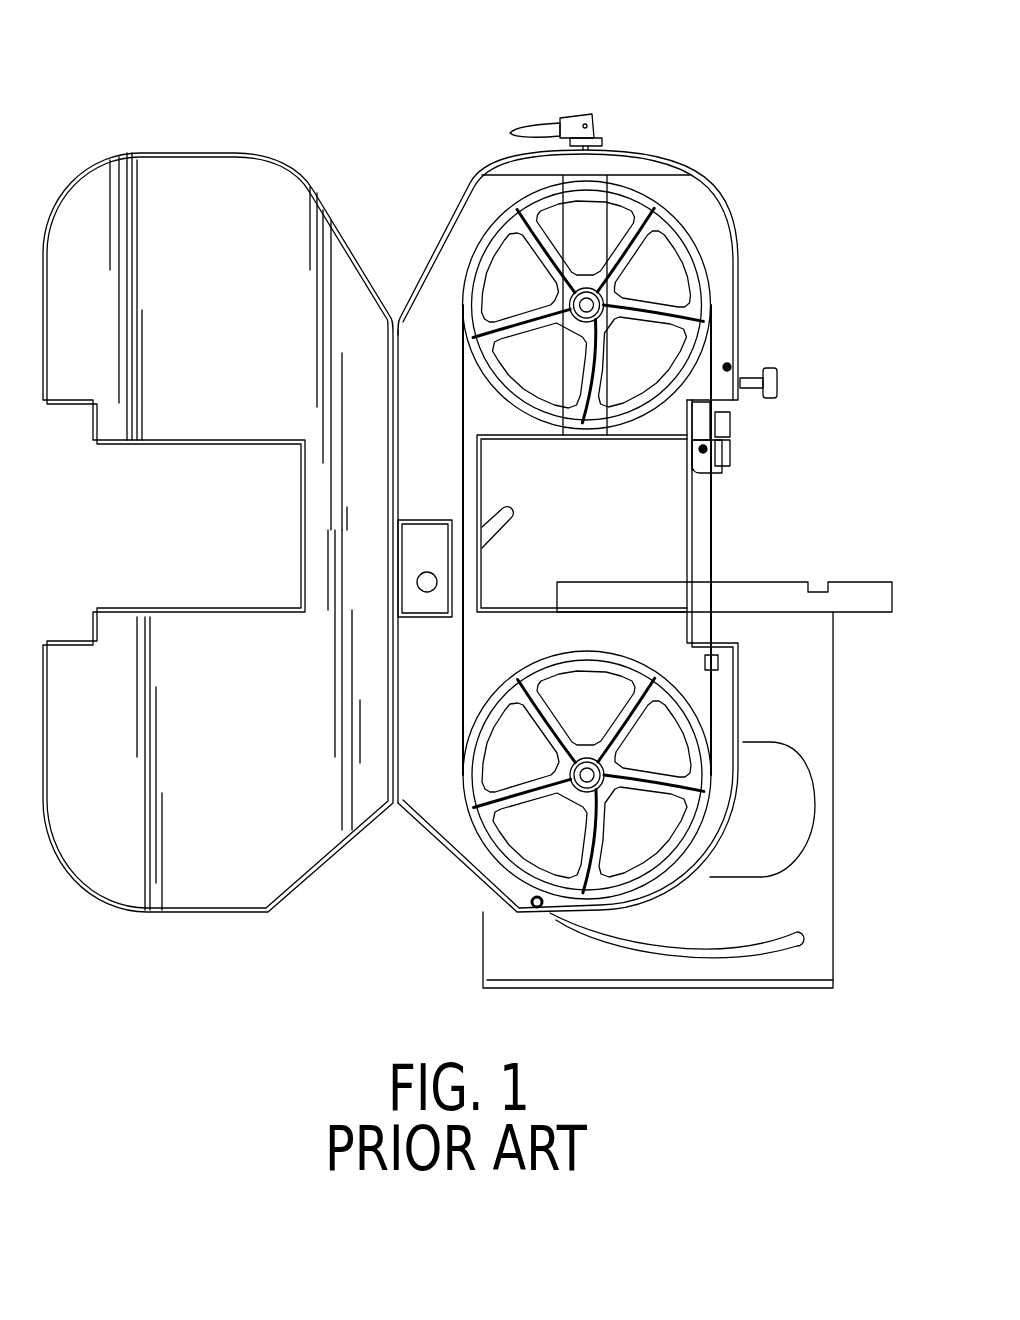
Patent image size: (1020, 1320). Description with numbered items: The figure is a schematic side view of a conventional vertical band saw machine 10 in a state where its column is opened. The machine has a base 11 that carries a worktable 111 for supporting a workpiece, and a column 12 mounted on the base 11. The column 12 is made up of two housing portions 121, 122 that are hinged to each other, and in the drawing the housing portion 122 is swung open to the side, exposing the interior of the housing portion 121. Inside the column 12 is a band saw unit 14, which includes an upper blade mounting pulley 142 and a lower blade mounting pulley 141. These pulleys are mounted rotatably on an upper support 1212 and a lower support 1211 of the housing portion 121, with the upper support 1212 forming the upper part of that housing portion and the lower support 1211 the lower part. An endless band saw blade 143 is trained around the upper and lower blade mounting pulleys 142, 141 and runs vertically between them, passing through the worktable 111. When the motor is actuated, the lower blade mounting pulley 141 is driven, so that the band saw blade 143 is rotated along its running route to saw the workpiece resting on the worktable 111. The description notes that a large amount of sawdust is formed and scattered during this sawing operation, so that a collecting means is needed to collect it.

The vertical band saw machine 10 is at (778, 151).
The base 11 is at (835, 755).
The worktable 111 is at (655, 592).
The column 12 is at (703, 182).
The housing portion 121 is at (470, 180).
The lower support 1211 is at (425, 815).
The upper support 1212 is at (447, 230).
The housing portion 122 is at (193, 157).
The band saw unit 14 is at (634, 190).
The lower blade mounting pulley 141 is at (522, 863).
The upper blade mounting pulley 142 is at (692, 290).
The band saw blade 143 is at (713, 537).